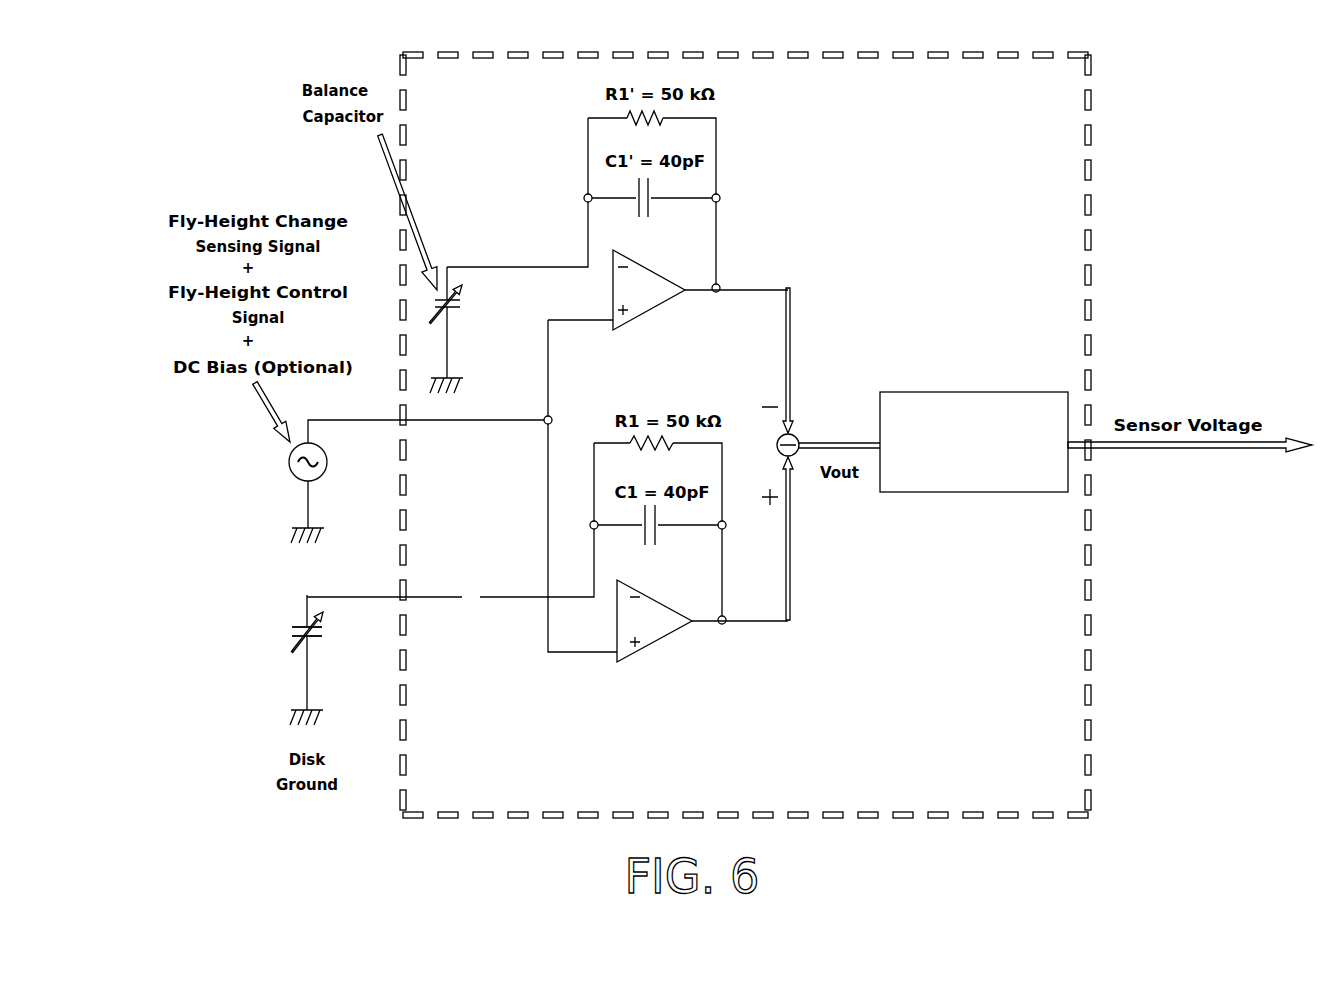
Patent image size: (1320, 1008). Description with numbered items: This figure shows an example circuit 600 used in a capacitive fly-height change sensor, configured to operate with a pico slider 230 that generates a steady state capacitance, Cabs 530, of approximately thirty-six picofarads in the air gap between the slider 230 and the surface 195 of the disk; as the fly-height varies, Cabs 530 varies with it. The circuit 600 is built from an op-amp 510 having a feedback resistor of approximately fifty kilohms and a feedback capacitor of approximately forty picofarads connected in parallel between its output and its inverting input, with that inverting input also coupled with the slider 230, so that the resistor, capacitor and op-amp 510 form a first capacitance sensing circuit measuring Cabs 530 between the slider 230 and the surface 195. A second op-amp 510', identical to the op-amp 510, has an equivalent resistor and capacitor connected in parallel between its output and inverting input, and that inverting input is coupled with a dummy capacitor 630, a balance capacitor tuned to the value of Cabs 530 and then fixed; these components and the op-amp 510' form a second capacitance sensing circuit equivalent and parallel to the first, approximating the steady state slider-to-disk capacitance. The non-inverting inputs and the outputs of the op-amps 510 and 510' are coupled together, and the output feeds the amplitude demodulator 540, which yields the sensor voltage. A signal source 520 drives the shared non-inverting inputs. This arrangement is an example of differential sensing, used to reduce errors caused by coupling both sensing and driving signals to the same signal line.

The circuit 600 is at (560, 797).
The dummy capacitor 630 is at (467, 330).
The second op-amp 510' is at (644, 313).
The op-amp 510 is at (649, 638).
The signal source 520 is at (327, 457).
The amplitude demodulator 540 is at (958, 480).
The Cabs 530 is at (331, 660).
The slider 230 is at (235, 600).
The surface 195 is at (229, 669).